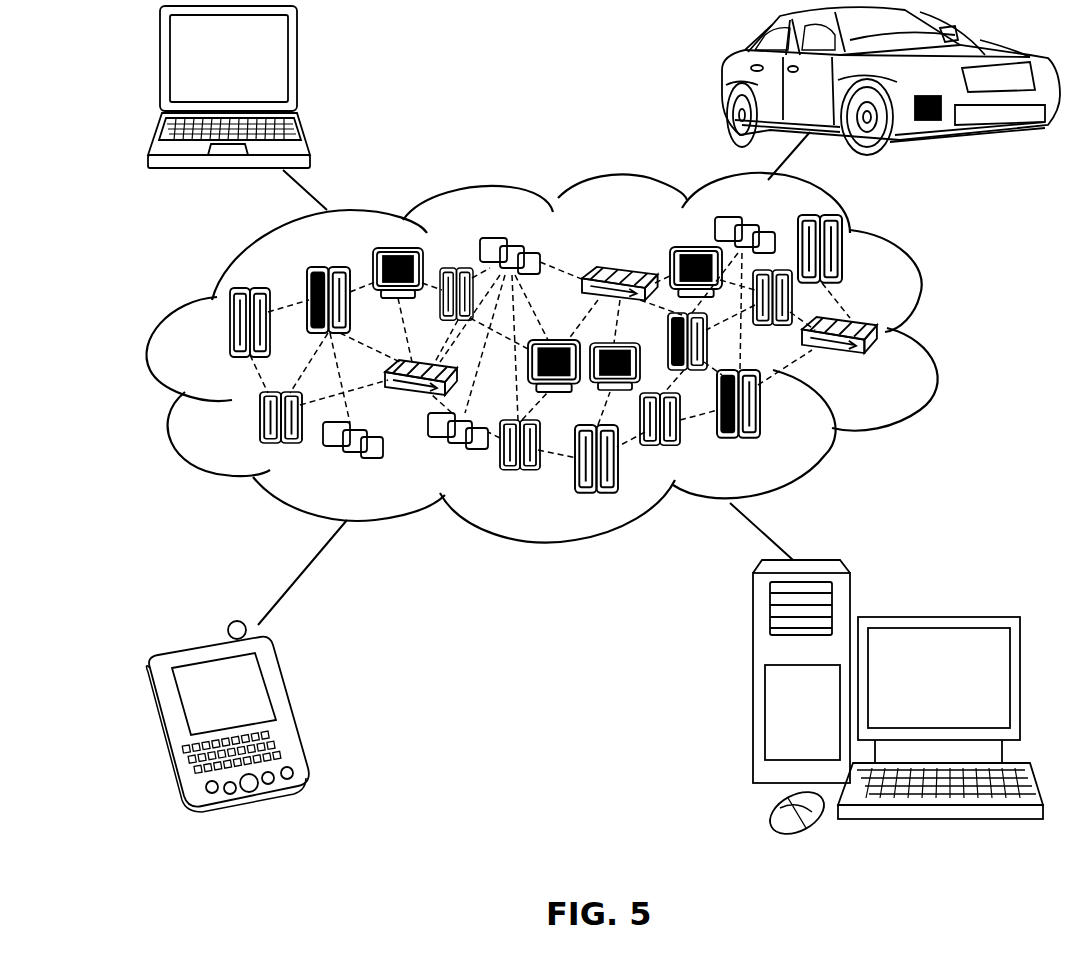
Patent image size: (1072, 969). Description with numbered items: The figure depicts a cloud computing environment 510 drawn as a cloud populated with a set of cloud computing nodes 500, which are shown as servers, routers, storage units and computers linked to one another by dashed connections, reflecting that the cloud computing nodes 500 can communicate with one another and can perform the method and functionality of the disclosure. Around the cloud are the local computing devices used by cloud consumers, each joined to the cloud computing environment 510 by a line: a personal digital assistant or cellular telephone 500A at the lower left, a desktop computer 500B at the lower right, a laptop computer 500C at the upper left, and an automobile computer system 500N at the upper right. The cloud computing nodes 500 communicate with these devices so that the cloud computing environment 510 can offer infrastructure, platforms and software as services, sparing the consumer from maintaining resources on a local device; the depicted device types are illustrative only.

The cloud computing nodes 500 is at (882, 362).
The cloud computing environment 510 is at (937, 332).
The personal digital assistant (PDA) or cellular telephone 500A is at (287, 708).
The desktop computer 500B is at (933, 613).
The laptop computer 500C is at (297, 67).
The automobile computer system 500N is at (725, 80).